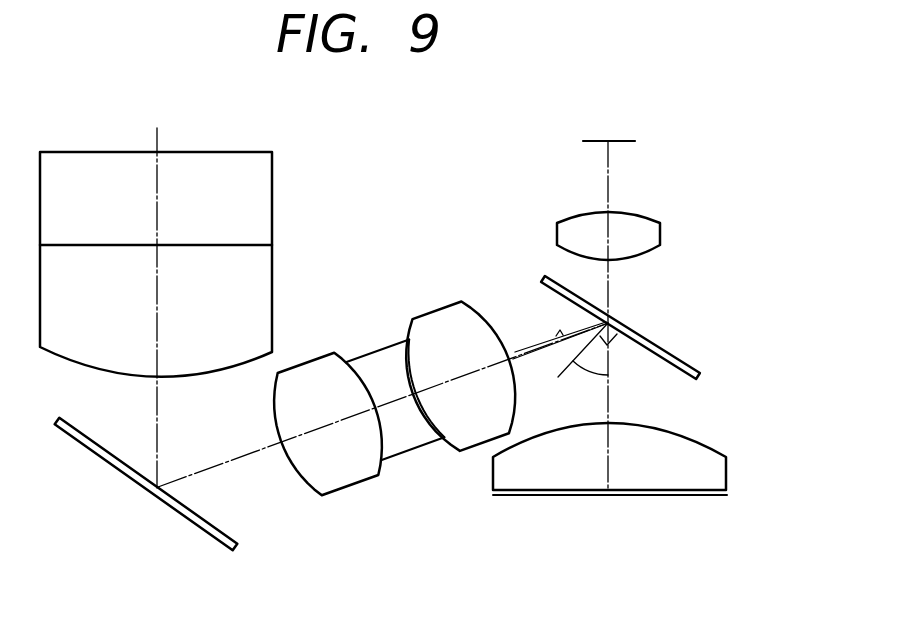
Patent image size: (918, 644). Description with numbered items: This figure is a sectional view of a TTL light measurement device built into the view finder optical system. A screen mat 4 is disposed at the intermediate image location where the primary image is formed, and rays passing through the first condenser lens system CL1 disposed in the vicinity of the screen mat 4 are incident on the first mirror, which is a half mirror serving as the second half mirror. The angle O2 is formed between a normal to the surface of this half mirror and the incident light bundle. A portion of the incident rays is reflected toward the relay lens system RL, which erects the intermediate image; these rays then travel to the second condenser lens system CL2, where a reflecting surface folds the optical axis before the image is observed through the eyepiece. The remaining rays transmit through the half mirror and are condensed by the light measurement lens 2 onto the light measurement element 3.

The second condenser lens system CL2 is at (272, 217).
The relay lens system RL is at (467, 297).
The angle between normal to second half mirror surface and incident light bundle O2 is at (583, 366).
The light measurement element 3 is at (625, 141).
The light measurement lens 2 is at (636, 213).
The first condenser lens system CL1 is at (727, 473).
The screen mat 4 is at (530, 500).